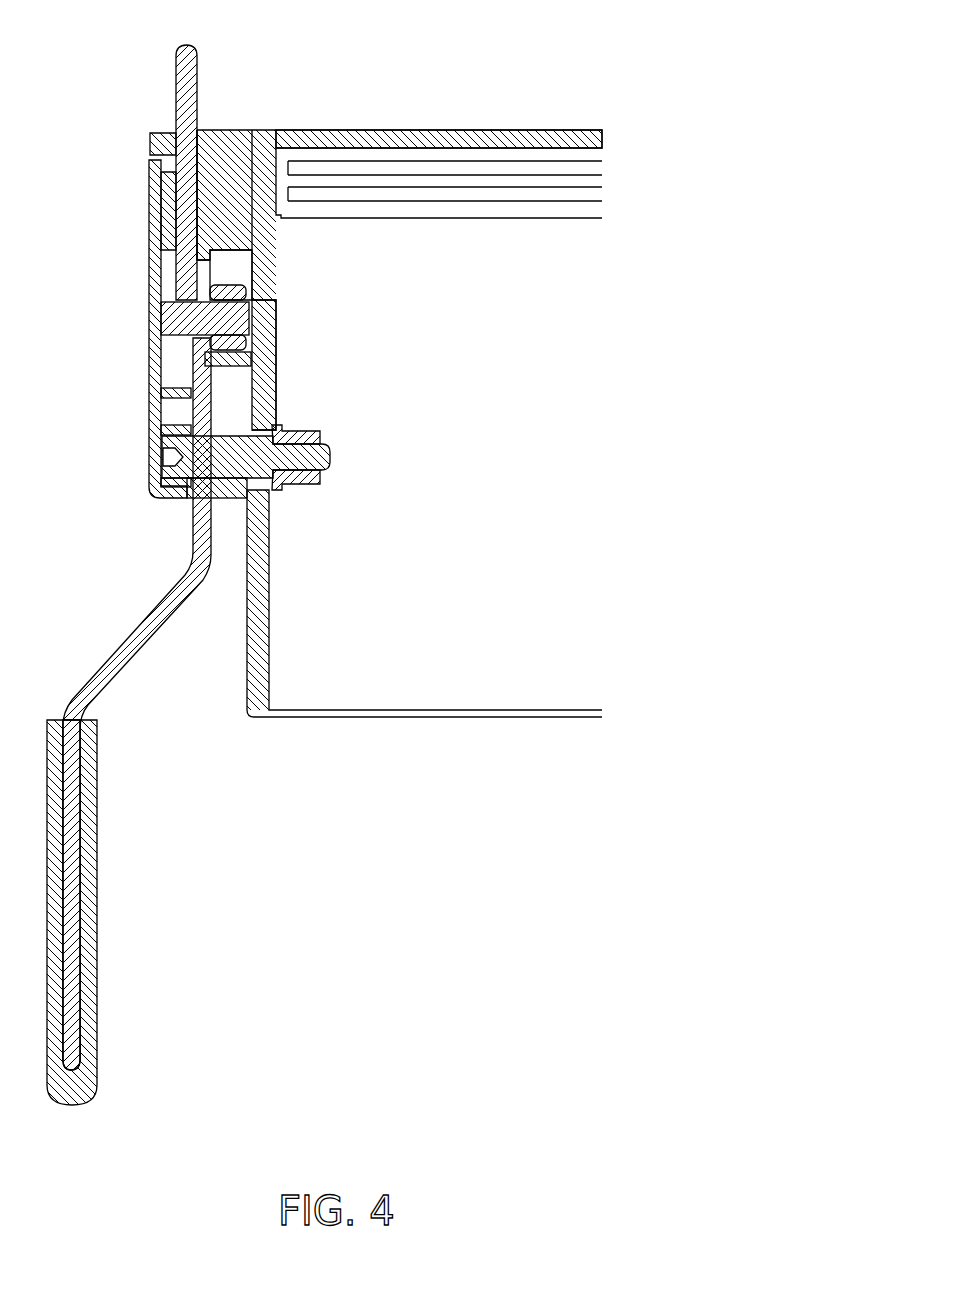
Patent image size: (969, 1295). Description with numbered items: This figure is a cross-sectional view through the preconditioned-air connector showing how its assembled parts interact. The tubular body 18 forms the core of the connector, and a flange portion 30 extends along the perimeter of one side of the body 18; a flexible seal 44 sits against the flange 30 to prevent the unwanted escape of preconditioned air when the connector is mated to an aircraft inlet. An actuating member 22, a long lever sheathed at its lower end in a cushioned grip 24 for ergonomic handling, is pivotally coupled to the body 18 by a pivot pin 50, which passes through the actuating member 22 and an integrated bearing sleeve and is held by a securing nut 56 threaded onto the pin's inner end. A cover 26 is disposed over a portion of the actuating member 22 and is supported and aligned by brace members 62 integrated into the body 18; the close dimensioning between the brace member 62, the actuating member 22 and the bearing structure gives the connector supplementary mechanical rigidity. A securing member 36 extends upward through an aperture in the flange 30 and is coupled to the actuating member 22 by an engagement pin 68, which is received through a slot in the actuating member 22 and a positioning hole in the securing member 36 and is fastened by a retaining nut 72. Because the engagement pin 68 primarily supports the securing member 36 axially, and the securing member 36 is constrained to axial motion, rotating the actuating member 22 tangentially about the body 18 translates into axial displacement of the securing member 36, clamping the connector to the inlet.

The tubular body 18 is at (278, 402).
The actuating member 22 is at (209, 368).
The cushioned grip 24 is at (90, 946).
The cover 26 is at (150, 185).
The flange portion 30 is at (150, 133).
The securing member 36 is at (199, 76).
The flexible seal 44 is at (248, 357).
The pivot pin 50 is at (331, 458).
The securing nut 56 is at (300, 488).
The brace member 62 is at (163, 393).
The engagement pin 68 is at (246, 320).
The retaining nut 72 is at (243, 301).